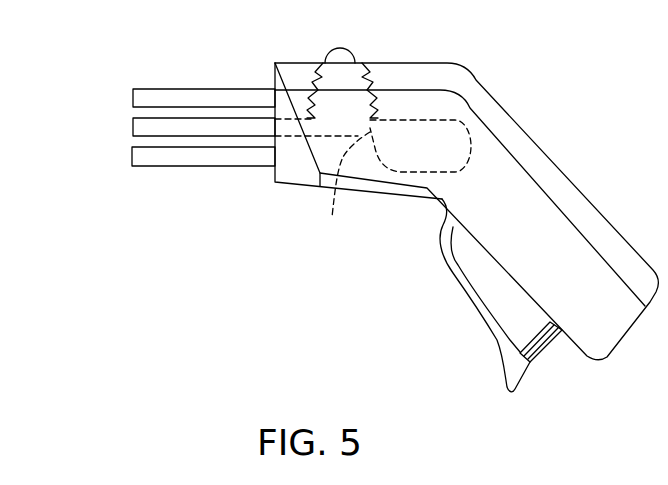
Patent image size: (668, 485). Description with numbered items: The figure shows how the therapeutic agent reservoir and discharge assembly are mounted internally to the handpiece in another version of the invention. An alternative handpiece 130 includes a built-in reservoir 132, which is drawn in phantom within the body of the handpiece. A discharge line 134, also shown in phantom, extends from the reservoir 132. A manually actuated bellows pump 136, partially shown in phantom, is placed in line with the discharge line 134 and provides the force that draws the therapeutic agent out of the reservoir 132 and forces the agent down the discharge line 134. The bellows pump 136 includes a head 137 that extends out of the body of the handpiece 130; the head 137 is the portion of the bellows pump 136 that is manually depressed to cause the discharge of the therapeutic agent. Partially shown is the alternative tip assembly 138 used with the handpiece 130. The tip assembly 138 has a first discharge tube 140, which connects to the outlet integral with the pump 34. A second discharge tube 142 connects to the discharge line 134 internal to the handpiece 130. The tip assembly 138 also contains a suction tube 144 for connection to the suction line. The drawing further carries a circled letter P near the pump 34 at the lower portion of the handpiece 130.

The tip assembly 138 is at (145, 73).
The suction tube 144 is at (133, 97).
The second discharge tube 142 is at (133, 125).
The first discharge tube 140 is at (185, 160).
The handpiece 130 is at (448, 114).
The head 137 is at (333, 52).
The bellows pump 136 is at (352, 73).
The reservoir 132 is at (440, 148).
The discharge line 134 is at (331, 218).
The pump 34 is at (458, 188).
The pivot P is at (470, 188).